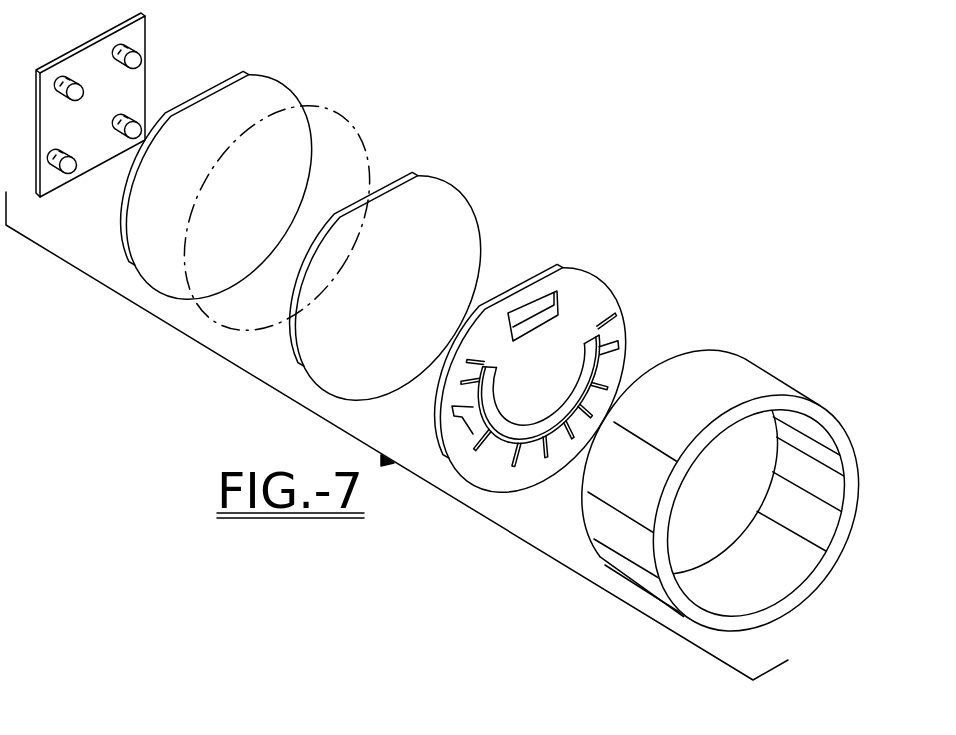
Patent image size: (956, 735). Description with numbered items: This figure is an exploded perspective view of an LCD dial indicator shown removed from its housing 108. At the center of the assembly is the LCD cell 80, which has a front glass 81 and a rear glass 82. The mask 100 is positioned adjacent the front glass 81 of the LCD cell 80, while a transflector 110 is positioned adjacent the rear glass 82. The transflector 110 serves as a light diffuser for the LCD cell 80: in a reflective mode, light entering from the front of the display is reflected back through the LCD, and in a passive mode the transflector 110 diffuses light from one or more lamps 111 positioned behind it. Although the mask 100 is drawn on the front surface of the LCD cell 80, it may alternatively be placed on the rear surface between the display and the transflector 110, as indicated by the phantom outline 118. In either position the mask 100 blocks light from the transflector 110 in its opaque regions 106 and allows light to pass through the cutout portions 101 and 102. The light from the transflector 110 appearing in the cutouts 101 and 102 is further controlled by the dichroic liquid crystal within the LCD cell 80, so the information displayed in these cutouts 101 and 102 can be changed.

The lamps 111 is at (143, 35).
The transflector 110 is at (280, 77).
The phantom outline 118 is at (357, 127).
The LCD cell 80 is at (422, 279).
The front glass 81 is at (453, 235).
The rear glass 82 is at (393, 180).
The mask 100 is at (574, 373).
The cutout portion 101 is at (562, 300).
The cutout portion 102 is at (580, 365).
The opaque regions 106 is at (602, 322).
The housing 108 is at (759, 378).